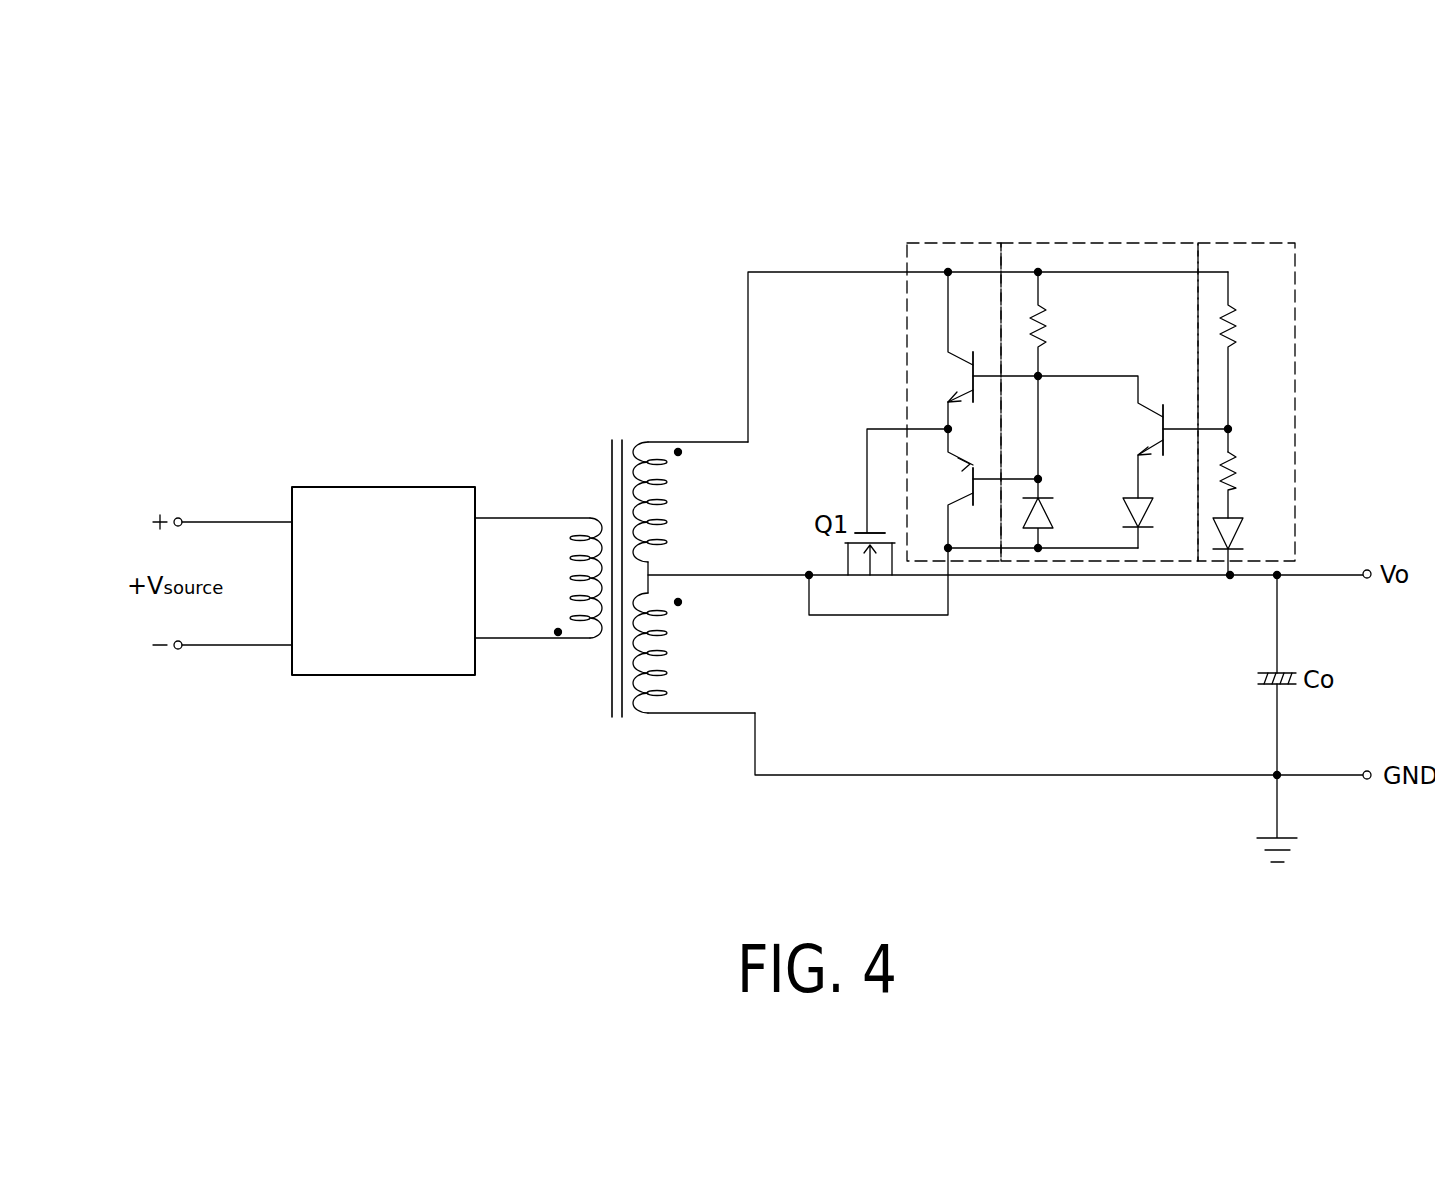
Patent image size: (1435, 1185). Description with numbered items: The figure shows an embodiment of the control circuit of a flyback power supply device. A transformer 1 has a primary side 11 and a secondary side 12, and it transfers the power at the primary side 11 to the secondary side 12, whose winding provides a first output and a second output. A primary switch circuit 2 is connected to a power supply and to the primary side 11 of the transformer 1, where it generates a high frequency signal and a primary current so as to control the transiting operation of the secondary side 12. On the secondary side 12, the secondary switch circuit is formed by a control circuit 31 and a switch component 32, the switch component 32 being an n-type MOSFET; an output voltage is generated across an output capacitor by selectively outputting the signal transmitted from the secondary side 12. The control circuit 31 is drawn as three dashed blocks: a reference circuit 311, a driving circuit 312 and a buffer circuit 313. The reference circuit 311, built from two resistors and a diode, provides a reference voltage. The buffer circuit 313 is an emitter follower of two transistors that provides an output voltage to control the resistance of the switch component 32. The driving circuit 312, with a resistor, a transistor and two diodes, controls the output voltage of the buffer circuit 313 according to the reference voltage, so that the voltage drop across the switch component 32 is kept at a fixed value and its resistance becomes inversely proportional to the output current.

The transformer 1 is at (615, 511).
The primary switch circuit 2 is at (388, 497).
The primary side 11 is at (587, 518).
The secondary side 12 is at (694, 536).
The control circuit 31 is at (1156, 361).
The switch component 32 is at (861, 530).
The reference circuit 311 is at (1246, 371).
The driving circuit 312 is at (1098, 240).
The buffer circuit 313 is at (944, 233).